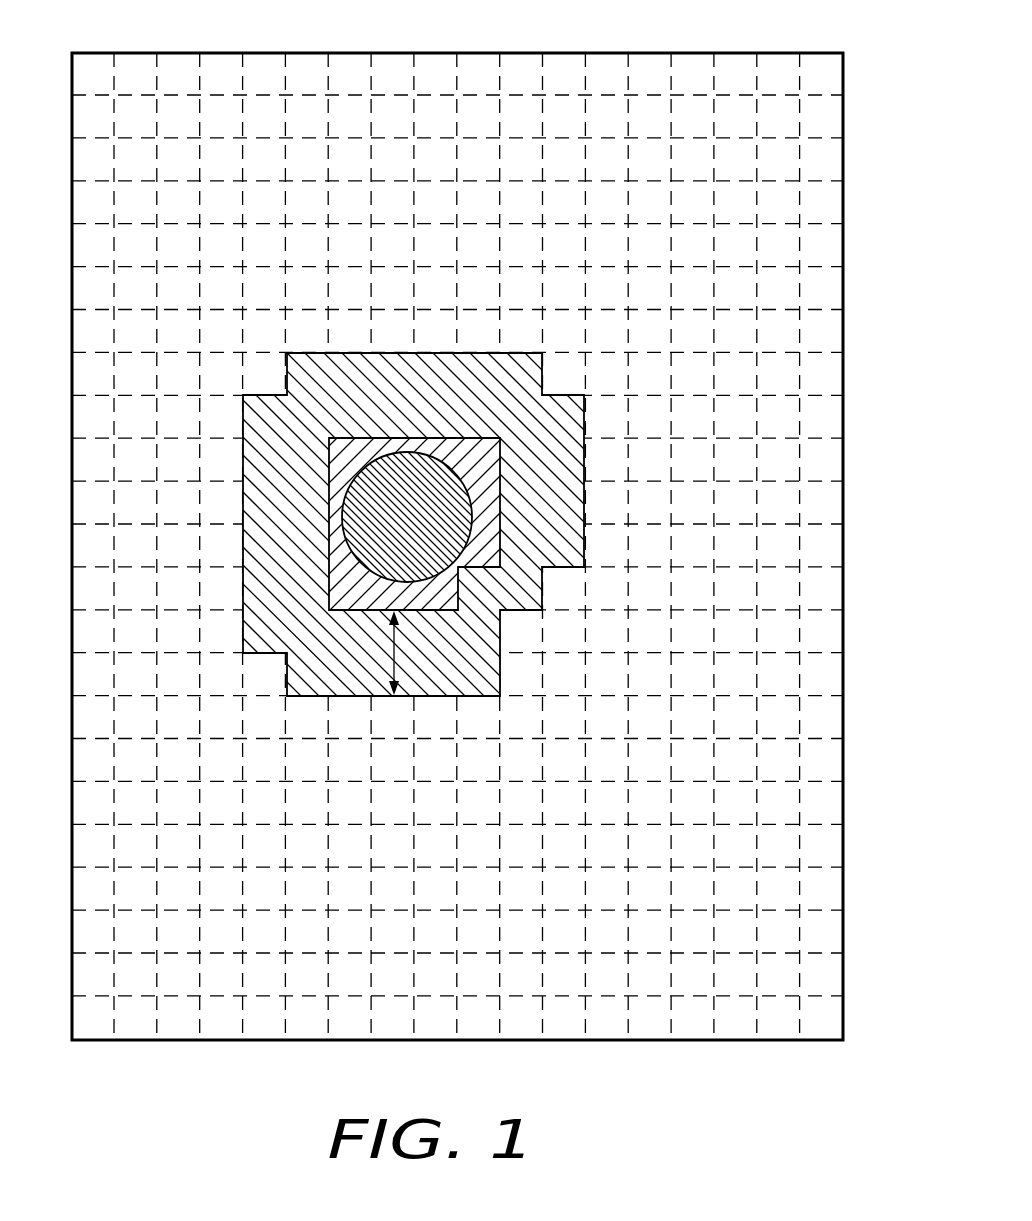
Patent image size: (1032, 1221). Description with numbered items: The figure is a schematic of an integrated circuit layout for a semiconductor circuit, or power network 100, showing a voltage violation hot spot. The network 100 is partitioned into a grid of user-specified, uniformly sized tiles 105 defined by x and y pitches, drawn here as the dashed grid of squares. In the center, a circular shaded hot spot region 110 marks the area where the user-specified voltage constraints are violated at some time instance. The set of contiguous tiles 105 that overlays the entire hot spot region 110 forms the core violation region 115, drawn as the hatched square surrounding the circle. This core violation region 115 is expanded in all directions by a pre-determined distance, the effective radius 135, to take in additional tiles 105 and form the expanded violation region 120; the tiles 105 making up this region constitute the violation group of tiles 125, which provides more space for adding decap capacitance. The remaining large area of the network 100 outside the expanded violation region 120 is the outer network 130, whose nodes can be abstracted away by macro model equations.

The power network 100 is at (603, 51).
The tiles 105 is at (822, 72).
The hot spot region 110 is at (466, 541).
The core violation region 115 is at (503, 462).
The expanded violation region 120 is at (584, 503).
The violation group of tiles 125 is at (284, 520).
The outer network 130 is at (778, 760).
The effective radius 135 is at (397, 660).